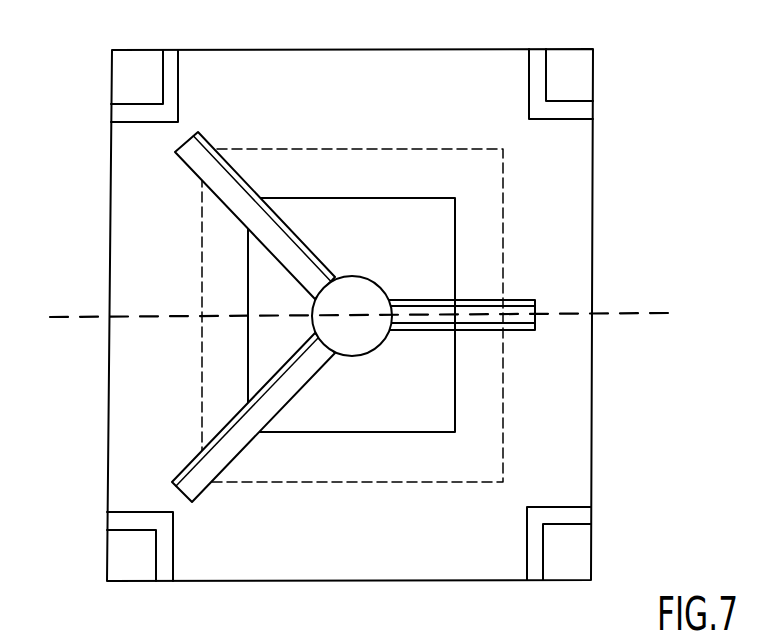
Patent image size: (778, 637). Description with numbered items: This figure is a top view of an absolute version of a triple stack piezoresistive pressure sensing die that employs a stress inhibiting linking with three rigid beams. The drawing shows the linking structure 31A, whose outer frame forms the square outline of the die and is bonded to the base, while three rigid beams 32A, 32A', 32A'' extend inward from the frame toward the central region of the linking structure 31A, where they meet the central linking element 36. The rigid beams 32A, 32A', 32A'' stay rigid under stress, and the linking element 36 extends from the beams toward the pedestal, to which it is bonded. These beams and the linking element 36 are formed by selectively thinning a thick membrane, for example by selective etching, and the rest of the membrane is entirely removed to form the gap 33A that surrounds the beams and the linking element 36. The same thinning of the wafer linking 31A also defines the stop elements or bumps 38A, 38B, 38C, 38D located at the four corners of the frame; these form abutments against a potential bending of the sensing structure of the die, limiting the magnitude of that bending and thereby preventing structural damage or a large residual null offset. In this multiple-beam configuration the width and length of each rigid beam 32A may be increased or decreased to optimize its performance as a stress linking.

The linking structure 31A is at (568, 190).
The rigid beam 32A is at (255, 156).
The rigid beam 32A' is at (253, 479).
The rigid beam 32A'' is at (534, 290).
The gap 33A is at (410, 215).
The linking element 36 is at (360, 290).
The stop element 38A is at (120, 72).
The stop element 38B is at (578, 73).
The stop element 38C is at (570, 548).
The stop element 38D is at (120, 553).